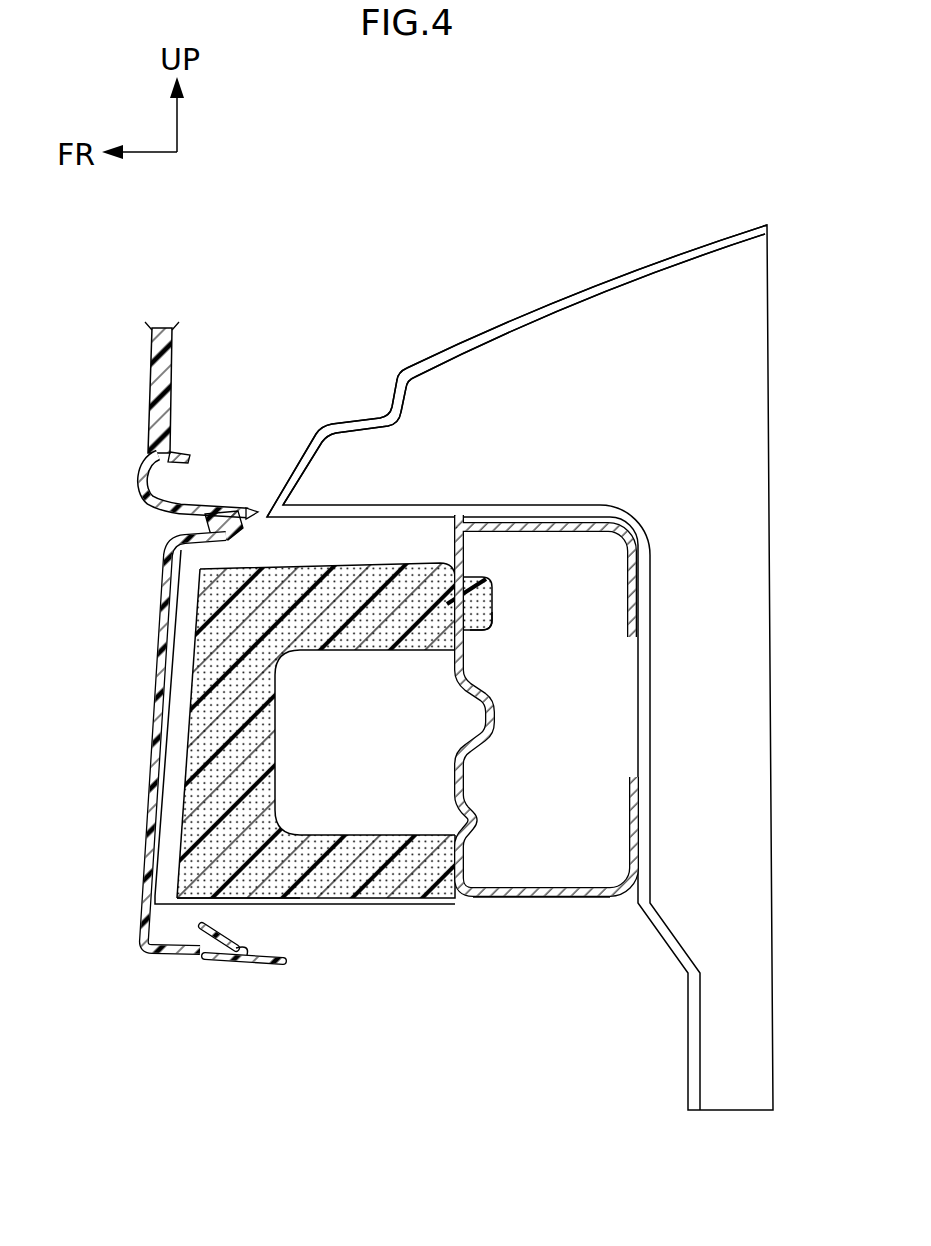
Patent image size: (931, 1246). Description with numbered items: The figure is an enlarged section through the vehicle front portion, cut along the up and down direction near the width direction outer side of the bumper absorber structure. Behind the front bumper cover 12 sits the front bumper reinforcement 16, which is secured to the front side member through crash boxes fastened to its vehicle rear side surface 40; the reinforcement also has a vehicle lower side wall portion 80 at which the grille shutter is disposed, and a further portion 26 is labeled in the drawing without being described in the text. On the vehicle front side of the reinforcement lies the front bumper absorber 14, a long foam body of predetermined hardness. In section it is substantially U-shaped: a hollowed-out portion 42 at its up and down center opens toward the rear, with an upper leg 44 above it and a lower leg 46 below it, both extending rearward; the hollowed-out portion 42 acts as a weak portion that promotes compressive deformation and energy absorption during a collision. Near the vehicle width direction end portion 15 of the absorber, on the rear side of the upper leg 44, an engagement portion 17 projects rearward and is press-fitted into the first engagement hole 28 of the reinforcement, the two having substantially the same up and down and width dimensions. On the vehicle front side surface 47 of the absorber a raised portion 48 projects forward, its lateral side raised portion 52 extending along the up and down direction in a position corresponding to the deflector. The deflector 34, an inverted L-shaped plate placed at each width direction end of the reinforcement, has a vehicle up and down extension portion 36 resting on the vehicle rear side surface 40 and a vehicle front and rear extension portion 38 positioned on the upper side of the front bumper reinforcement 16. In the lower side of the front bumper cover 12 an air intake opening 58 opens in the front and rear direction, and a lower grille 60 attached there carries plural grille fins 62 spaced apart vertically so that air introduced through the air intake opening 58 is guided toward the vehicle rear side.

The front bumper cover 12 is at (150, 812).
The front bumper absorber 14 is at (267, 719).
The vehicle width direction end portion 15 is at (275, 906).
The front bumper reinforcement 16 is at (587, 912).
The engagement portion 17 is at (490, 624).
The side wall of bracket 26 is at (477, 779).
The first engagement hole 28 is at (483, 593).
The deflector 34 is at (632, 254).
The vehicle up and down extension portion 36 is at (770, 703).
The vehicle front and rear extension portion 38 is at (462, 427).
The vehicle rear side surface 40 is at (638, 605).
The hollowed-out portion 42 is at (367, 768).
The upper leg 44 is at (347, 580).
The lower leg 46 is at (365, 905).
The vehicle front side surface 47 is at (178, 852).
The raised portion 48 is at (245, 743).
The lateral side raised portion 52 is at (177, 672).
The air intake opening 58 is at (262, 1060).
The lower grille 60 is at (270, 973).
The grille fin 62 is at (260, 965).
The vehicle lower side wall portion 80 is at (505, 902).